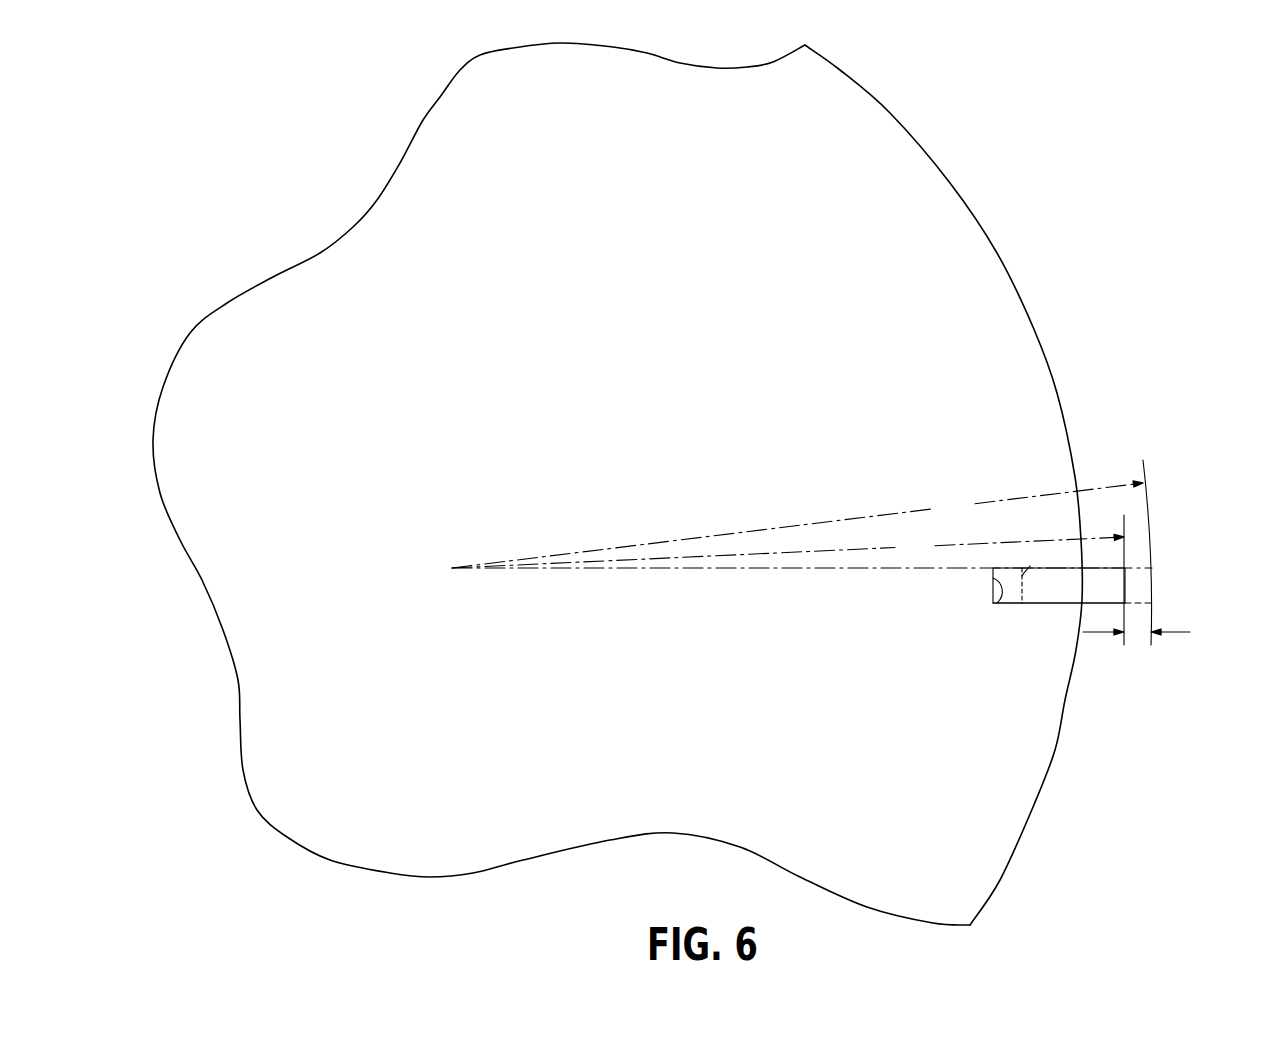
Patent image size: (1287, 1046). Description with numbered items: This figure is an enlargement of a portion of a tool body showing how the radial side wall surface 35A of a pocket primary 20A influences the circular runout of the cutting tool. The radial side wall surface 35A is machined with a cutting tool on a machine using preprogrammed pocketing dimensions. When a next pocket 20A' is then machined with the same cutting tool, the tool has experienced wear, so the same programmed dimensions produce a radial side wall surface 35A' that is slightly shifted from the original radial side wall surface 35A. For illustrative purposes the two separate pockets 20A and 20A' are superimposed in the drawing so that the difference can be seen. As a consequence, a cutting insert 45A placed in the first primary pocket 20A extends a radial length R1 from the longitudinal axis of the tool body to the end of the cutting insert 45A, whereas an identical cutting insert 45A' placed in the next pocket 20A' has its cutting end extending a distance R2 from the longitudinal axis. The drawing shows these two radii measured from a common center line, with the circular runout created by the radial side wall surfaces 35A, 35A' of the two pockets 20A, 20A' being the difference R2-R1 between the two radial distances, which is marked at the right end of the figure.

The pocket primary 20A is at (930, 662).
The next pocket 20A' is at (1021, 686).
The radial side wall surface 35A is at (921, 619).
The radial side wall surface 35A' is at (948, 583).
The cutting insert 45A is at (948, 655).
The cutting insert 45A' is at (1087, 689).
The radial length R1 is at (788, 580).
The distance R2 is at (802, 552).
The circular runout R2-R1 is at (1137, 640).